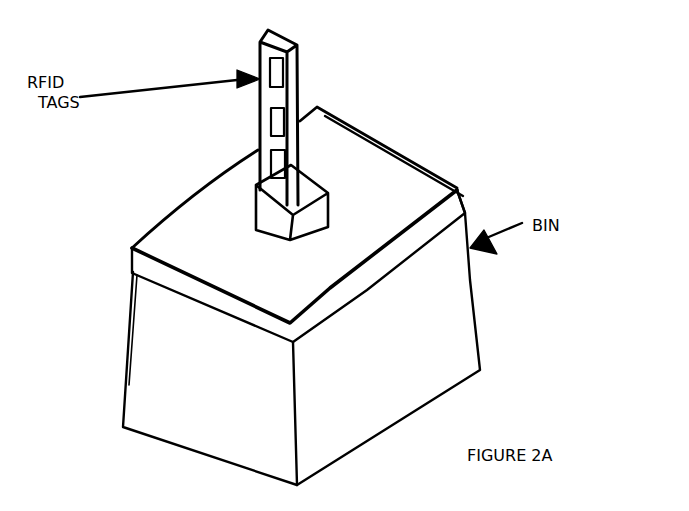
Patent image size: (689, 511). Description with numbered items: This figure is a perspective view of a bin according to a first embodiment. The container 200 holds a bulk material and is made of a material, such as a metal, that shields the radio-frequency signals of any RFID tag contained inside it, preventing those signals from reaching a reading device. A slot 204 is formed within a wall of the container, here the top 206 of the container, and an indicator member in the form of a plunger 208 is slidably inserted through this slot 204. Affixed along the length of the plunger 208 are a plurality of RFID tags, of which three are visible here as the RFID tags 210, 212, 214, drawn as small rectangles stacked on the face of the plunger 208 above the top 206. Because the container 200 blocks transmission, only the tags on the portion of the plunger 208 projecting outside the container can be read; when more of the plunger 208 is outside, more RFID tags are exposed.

The container 200 is at (470, 323).
The slot 204 is at (262, 181).
The top 206 is at (452, 181).
The plunger 208 is at (268, 98).
The RFID tag 210 is at (292, 63).
The RFID tag 212 is at (300, 100).
The RFID tag 214 is at (308, 153).